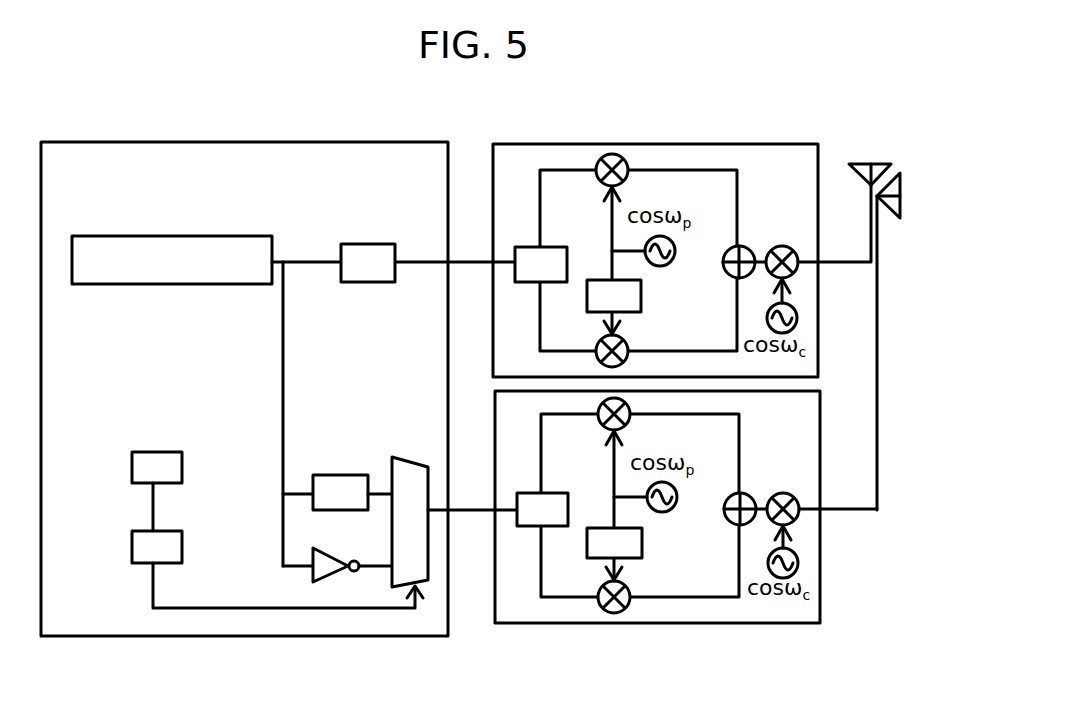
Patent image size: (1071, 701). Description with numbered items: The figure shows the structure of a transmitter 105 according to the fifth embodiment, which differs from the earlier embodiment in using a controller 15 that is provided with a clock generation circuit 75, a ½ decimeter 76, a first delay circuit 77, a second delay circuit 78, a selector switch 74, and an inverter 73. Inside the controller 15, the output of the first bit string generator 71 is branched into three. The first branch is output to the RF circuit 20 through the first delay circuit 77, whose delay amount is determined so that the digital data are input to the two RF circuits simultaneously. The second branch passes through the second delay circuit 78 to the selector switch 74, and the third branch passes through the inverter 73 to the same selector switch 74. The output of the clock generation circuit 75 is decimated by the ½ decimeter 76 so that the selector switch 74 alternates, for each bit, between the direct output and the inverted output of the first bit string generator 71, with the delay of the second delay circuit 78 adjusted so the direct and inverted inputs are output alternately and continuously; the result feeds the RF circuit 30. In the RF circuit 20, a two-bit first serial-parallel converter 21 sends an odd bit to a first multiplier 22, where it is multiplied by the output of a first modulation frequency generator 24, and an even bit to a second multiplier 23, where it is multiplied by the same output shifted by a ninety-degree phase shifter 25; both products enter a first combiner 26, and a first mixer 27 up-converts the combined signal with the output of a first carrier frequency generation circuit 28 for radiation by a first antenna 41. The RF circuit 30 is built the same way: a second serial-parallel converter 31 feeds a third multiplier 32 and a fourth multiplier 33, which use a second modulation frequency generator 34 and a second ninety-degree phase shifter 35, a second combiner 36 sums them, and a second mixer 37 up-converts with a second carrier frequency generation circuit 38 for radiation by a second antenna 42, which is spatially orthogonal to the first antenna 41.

The transmitter 105 is at (476, 113).
The controller 15 is at (119, 141).
The first bit string generator 71 is at (102, 234).
The first delay circuit 77 is at (368, 243).
The second delay circuit 78 is at (348, 473).
The clock generation circuit 75 is at (140, 452).
The ½ decimeter 76 is at (140, 531).
The inverter 73 is at (338, 553).
The selector switch 74 is at (413, 457).
The RF circuit 20 is at (590, 143).
The first serial-parallel converter 21 is at (533, 245).
The first multiplier 22 is at (628, 160).
The second multiplier 23 is at (628, 342).
The first modulation frequency generator 24 is at (675, 245).
The 90-degree phase shifter 25 is at (641, 296).
The first combiner 26 is at (743, 248).
The first mixer 27 is at (782, 248).
The first carrier frequency generation circuit 28 is at (798, 317).
The RF circuit 30 is at (588, 623).
The second serial-parallel converter 31 is at (533, 491).
The third multiplier 32 is at (630, 404).
The fourth multiplier 33 is at (630, 605).
The second modulation frequency generator 34 is at (677, 491).
The second 90-degree phase shifter 35 is at (642, 543).
The second combiner 36 is at (745, 494).
The second mixer 37 is at (785, 494).
The second carrier frequency generation circuit 38 is at (800, 562).
The first antenna 41 is at (868, 163).
The second antenna 42 is at (900, 190).